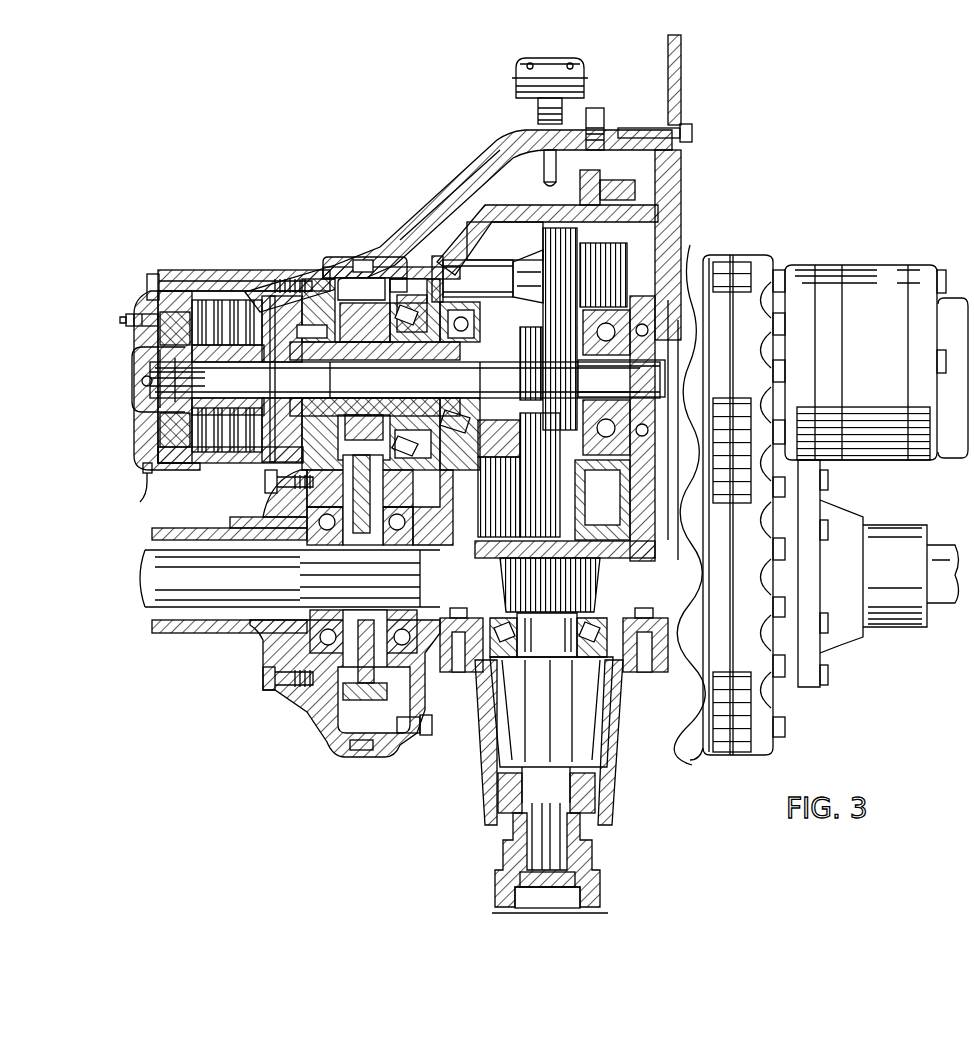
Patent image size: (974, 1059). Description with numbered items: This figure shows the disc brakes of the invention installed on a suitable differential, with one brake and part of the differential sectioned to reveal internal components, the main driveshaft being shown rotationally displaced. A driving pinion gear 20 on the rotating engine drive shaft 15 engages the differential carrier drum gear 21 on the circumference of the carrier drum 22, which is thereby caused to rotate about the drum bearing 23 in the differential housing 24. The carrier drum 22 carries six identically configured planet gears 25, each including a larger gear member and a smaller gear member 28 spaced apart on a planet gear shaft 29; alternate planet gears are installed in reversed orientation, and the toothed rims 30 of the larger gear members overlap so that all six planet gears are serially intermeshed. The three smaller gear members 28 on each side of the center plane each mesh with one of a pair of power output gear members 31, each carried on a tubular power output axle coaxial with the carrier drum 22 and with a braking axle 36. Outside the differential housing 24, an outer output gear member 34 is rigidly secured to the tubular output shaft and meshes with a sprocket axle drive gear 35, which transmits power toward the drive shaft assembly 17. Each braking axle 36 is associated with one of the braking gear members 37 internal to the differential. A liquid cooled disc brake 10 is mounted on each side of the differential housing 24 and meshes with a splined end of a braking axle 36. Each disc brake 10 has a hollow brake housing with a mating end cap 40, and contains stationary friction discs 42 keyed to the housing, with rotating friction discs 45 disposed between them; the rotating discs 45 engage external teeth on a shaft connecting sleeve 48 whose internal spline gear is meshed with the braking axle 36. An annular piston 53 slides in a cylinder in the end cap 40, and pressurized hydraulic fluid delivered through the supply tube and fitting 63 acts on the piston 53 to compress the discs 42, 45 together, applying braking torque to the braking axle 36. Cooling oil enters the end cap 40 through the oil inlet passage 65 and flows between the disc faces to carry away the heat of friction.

The disc brake 10 is at (252, 256).
The engine drive shaft 15 is at (536, 716).
The drive shaft assembly 17 is at (205, 633).
The driving pinion gear 20 is at (518, 584).
The differential carrier drum gear 21 is at (596, 186).
The carrier drum 22 is at (457, 240).
The drum bearing 23 is at (513, 236).
The differential housing 24 is at (457, 188).
The planet gear 25 is at (500, 262).
The smaller gear member 28 is at (676, 212).
The planet gear shaft 29 is at (465, 230).
The toothed rim 30 is at (553, 228).
The power output gear member 31 is at (494, 320).
The outer output gear member 34 is at (350, 300).
The sprocket axle drive gear 35 is at (350, 683).
The braking axle 36 is at (424, 390).
The braking gear member 37 is at (592, 368).
The end cap 40 is at (134, 428).
The stationary friction disc 42 is at (213, 300).
The rotating friction disc 45 is at (200, 312).
The shaft connecting sleeve 48 is at (272, 296).
The annular piston 53 is at (150, 318).
The hydraulic fluid supply tube and fitting 63 is at (168, 484).
The oil inlet passage 65 is at (140, 366).